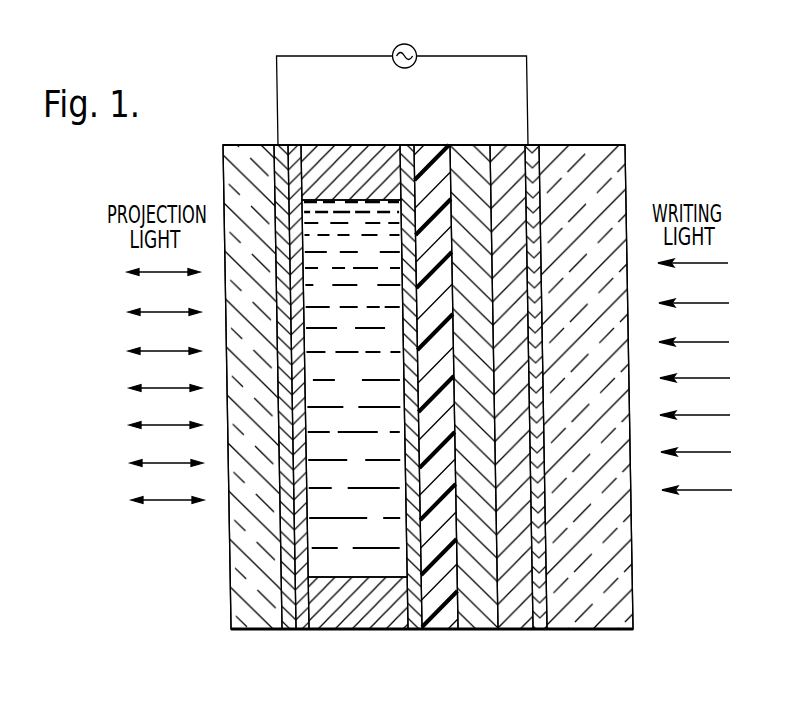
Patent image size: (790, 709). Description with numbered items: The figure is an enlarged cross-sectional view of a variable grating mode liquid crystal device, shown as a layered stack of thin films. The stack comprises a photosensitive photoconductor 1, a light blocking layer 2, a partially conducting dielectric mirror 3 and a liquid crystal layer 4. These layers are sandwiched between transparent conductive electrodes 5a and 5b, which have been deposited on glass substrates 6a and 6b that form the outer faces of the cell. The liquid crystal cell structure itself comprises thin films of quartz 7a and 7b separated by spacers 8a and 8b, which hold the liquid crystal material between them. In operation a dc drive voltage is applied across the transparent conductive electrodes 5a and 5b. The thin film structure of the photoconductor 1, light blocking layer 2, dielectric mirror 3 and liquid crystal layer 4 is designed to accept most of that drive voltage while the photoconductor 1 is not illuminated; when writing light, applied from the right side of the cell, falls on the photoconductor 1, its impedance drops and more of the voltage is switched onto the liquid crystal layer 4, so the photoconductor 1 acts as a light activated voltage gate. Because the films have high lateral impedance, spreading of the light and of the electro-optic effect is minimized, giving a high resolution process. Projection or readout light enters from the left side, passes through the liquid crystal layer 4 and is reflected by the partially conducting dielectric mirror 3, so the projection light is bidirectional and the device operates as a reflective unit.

The photoconductor 1 is at (519, 612).
The light blocking layer 2 is at (470, 148).
The partially conducting dielectric mirror 3 is at (439, 620).
The liquid crystal layer 4 is at (347, 569).
The transparent conductive electrode 5a is at (281, 625).
The transparent conductive electrode 5b is at (532, 145).
The glass substrate 6a is at (222, 618).
The glass substrate 6b is at (624, 628).
The thin film of quartz 7a is at (294, 145).
The thin film of quartz 7b is at (408, 143).
The spacer 8a is at (342, 150).
The spacer 8b is at (357, 620).